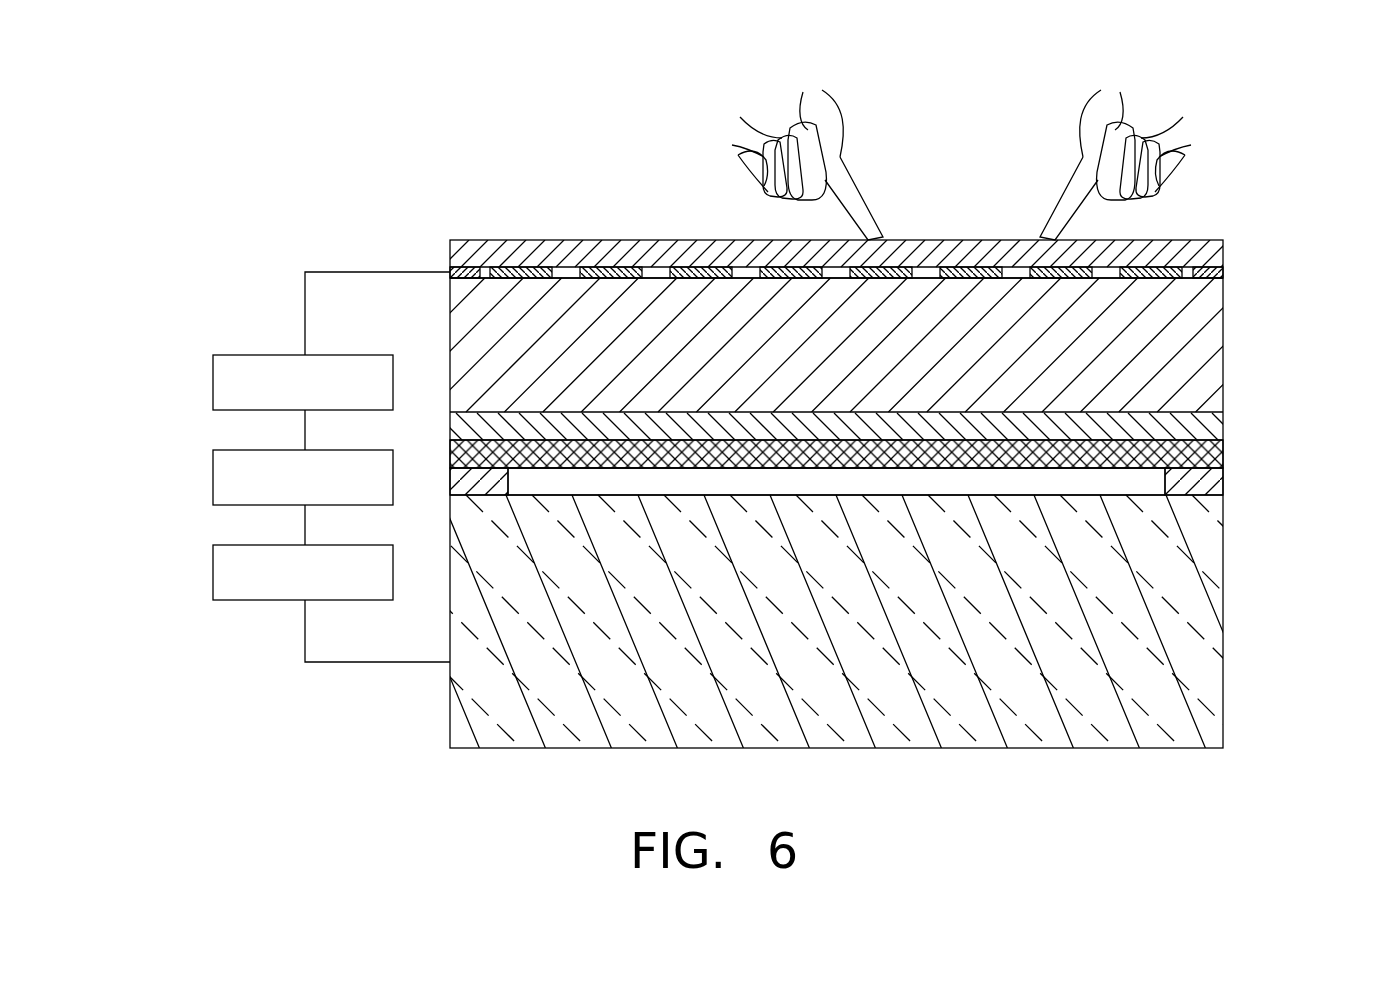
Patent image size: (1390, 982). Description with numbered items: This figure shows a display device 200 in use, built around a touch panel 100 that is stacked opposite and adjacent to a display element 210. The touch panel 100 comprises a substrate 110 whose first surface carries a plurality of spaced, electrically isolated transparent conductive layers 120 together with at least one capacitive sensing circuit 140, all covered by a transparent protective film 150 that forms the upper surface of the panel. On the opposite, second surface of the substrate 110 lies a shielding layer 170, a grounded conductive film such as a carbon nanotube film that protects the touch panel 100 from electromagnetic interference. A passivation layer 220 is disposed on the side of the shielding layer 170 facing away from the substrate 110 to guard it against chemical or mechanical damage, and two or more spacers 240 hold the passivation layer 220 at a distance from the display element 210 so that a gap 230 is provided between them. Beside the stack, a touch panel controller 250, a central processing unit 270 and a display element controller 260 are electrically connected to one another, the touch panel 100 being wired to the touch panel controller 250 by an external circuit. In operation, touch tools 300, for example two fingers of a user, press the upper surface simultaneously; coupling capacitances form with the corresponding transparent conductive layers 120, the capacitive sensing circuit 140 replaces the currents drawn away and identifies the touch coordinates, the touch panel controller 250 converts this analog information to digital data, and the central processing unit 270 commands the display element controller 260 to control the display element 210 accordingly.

The touch panel 100 is at (1322, 215).
The substrate 110 is at (1210, 367).
The transparent conductive layers 120 is at (1167, 279).
The capacitive sensing circuit 140 is at (1210, 272).
The transparent protective film 150 is at (1183, 253).
The shielding layer 170 is at (1187, 430).
The display device 200 is at (727, 92).
The display element 210 is at (1188, 678).
The passivation layer 220 is at (1210, 455).
The gap 230 is at (1123, 483).
The spacers 240 is at (1203, 482).
The touch panel controller 250 is at (235, 387).
The display element controller 260 is at (235, 578).
The central processing unit 270 is at (235, 481).
The touch tools 300 is at (1078, 193).